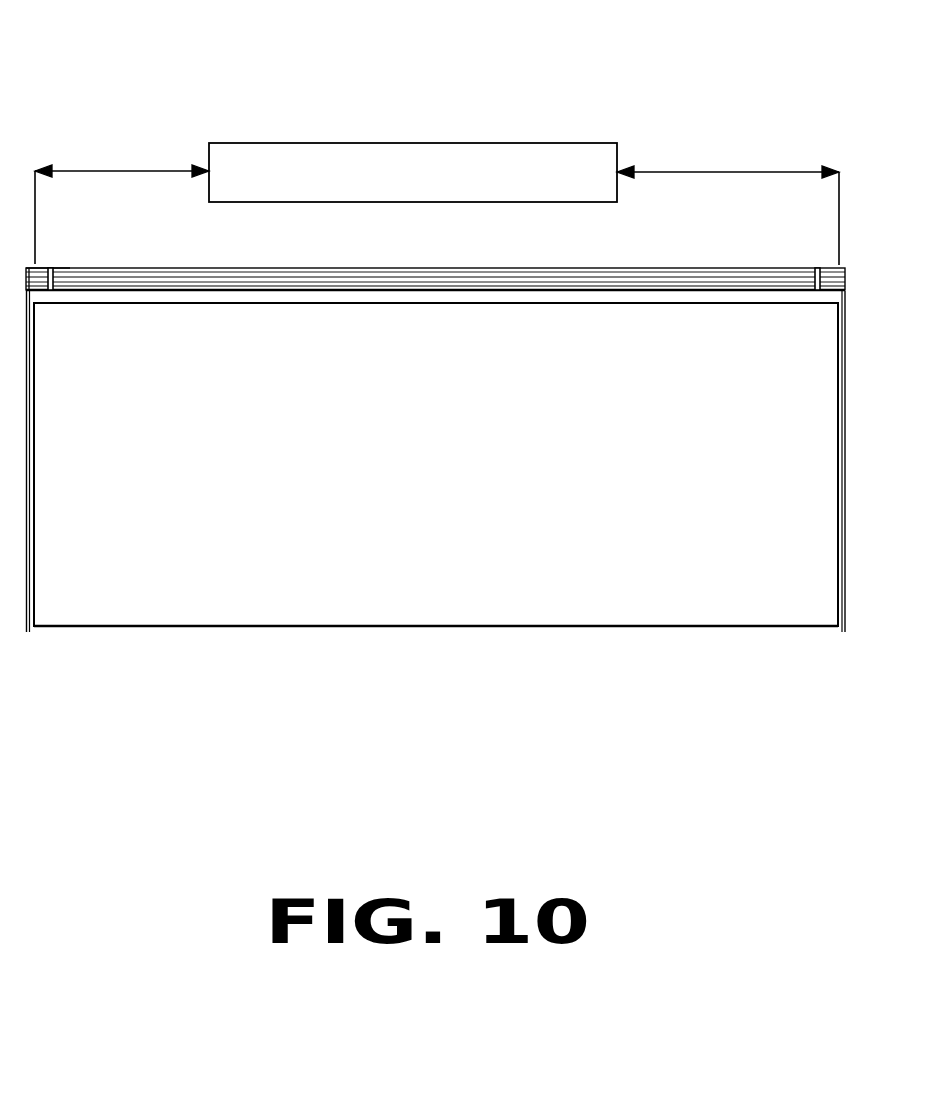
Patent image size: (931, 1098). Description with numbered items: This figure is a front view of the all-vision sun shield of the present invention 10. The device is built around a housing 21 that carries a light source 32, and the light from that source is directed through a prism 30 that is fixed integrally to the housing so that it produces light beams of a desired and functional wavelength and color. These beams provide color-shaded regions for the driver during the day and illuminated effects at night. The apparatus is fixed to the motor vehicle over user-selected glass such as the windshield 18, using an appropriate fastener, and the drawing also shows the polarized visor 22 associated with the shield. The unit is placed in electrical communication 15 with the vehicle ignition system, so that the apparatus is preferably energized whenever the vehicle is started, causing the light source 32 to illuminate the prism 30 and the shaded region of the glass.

The present invention 10 is at (172, 142).
The electrical communication 15 is at (449, 192).
The windshield 18 is at (226, 628).
The housing 21 is at (66, 262).
The polarized visor 22 is at (430, 514).
The prism 30 is at (320, 290).
The light source 32 is at (650, 262).